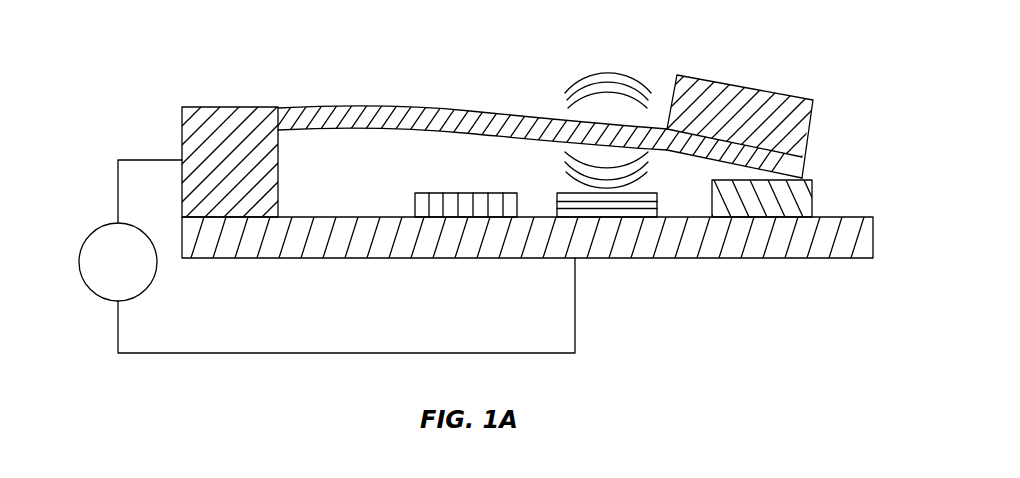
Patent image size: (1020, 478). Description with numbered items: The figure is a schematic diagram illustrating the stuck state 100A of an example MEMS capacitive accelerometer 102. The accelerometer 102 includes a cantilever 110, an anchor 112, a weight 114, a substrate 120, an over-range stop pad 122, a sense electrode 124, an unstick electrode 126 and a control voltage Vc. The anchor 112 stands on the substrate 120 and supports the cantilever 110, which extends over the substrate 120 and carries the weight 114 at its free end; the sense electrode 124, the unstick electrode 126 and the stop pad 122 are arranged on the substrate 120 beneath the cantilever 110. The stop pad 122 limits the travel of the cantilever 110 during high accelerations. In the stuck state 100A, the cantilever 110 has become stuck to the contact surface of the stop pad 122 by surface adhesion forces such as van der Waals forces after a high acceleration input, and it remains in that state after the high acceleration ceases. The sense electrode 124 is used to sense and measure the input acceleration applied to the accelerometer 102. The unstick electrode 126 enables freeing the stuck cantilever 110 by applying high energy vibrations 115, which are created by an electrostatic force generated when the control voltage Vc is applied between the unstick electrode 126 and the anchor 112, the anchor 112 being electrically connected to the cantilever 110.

The stuck state 100A is at (132, 61).
The MEMS capacitive accelerometer 102 is at (572, 97).
The cantilever 110 is at (302, 107).
The anchor 112 is at (203, 107).
The weight 114 is at (750, 87).
The high energy vibrations 115 is at (550, 67).
The substrate 120 is at (238, 259).
The over-range stop pad 122 is at (764, 218).
The sense electrode 124 is at (457, 218).
The unstick electrode 126 is at (642, 218).